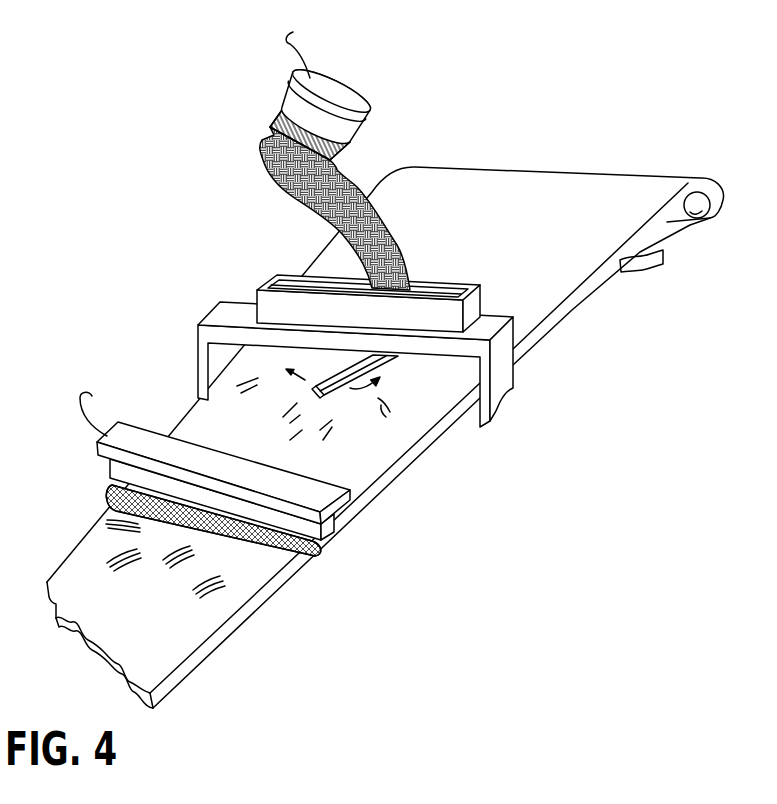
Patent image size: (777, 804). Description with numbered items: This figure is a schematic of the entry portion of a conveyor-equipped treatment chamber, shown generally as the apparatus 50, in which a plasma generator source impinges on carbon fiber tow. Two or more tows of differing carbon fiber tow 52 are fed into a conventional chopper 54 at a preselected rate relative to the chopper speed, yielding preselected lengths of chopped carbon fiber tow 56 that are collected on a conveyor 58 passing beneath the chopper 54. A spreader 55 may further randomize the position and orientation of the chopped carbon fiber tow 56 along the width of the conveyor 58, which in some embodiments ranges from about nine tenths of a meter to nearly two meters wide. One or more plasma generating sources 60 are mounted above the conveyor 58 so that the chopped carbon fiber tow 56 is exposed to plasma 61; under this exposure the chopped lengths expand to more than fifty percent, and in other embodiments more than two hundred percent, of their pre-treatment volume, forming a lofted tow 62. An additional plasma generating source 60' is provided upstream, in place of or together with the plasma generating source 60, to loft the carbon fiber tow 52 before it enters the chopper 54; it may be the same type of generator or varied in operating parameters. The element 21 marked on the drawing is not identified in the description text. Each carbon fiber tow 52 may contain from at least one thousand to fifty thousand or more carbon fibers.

The apparatus 50 is at (133, 223).
The hatched collar 21 is at (279, 112).
The carbon fiber tow 52 is at (262, 136).
The plasma generating source 60' is at (339, 87).
The chopper 54 is at (277, 274).
The spreader 55 is at (370, 358).
The chopped carbon fiber tow 56 is at (382, 398).
The conveyor 58 is at (400, 461).
The plasma generating source 60 is at (215, 461).
The plasma 61 is at (318, 556).
The lofted tow 62 is at (113, 557).